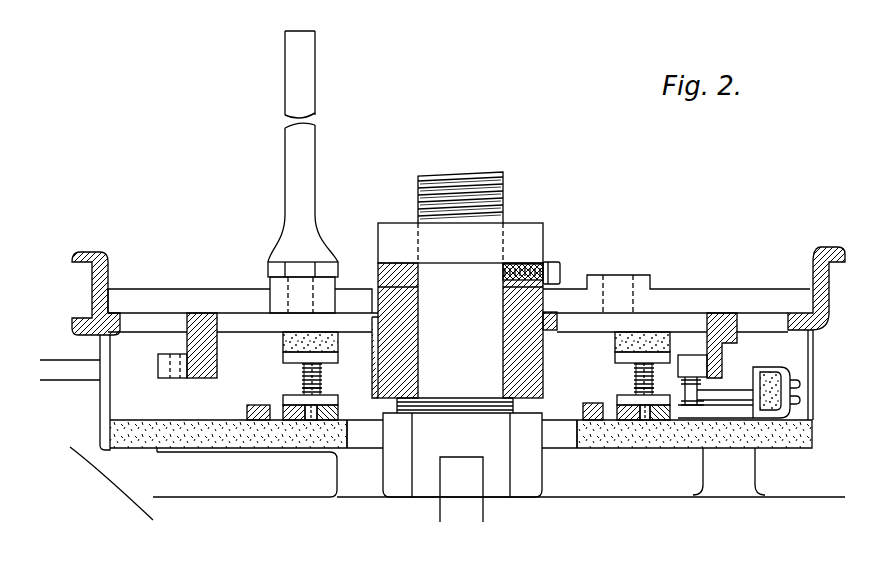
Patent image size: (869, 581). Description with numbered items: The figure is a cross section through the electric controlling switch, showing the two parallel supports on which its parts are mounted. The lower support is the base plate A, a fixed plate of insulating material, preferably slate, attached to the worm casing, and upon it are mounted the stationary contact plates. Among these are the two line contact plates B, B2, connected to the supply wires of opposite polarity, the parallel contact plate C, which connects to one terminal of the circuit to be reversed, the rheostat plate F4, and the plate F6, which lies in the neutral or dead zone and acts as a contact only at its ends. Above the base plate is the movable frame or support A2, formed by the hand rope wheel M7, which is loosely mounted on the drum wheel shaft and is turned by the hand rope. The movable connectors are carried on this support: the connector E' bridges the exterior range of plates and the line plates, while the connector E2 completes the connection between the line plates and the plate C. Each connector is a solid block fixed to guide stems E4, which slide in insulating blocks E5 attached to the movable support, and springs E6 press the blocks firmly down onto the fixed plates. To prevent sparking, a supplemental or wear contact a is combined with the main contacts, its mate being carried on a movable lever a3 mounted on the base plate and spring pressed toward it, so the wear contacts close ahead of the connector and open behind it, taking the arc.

The hand rope wheel M7 is at (96, 292).
The movable frame or support A2 is at (679, 322).
The base plate A is at (812, 432).
The line contact plate B is at (499, 461).
The line contact plate B2 is at (625, 420).
The contact plate C is at (451, 434).
The neutral zone contact plate F6 is at (253, 425).
The insulating block E5 is at (283, 340).
The guide stem E4 is at (302, 374).
The spring E6 is at (322, 388).
The movable contact or connector E' is at (321, 406).
The rheostat contact plate F4 is at (645, 420).
The movable connector E2 is at (626, 424).
The movable lever a3 is at (700, 392).
The supplemental or wear contact a is at (773, 375).